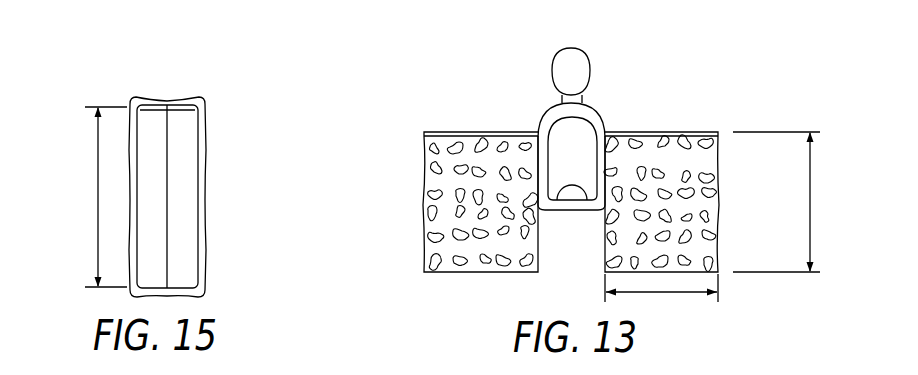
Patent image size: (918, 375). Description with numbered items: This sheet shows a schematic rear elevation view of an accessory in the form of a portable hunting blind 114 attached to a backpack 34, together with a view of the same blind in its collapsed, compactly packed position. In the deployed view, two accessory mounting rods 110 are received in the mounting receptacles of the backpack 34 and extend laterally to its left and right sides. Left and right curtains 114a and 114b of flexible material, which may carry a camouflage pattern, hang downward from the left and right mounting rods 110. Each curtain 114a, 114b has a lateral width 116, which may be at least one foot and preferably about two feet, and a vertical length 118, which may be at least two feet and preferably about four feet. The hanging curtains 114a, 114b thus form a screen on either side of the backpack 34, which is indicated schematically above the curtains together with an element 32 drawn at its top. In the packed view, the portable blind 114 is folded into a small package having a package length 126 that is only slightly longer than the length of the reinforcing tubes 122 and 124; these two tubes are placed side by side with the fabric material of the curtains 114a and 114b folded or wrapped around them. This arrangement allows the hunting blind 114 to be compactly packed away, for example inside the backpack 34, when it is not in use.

In FIG. 13, the ball 32 is at (567, 48).
In FIG. 13, the backpack 34 is at (583, 113).
In FIG. 13, the accessory mounting rods 110 is at (507, 130).
In FIG. 15, the portable hunting blind 114 is at (211, 174).
In FIG. 15, the left curtain 114a is at (203, 118).
In FIG. 13, the left curtain 114a is at (450, 195).
In FIG. 13, the right curtain 114b is at (697, 192).
In FIG. 13, the lateral width 116 is at (683, 292).
In FIG. 13, the vertical length 118 is at (810, 208).
In FIG. 15, the reinforcing tube 122 is at (153, 213).
In FIG. 15, the reinforcing tube 124 is at (180, 138).
In FIG. 15, the package length 126 is at (98, 182).